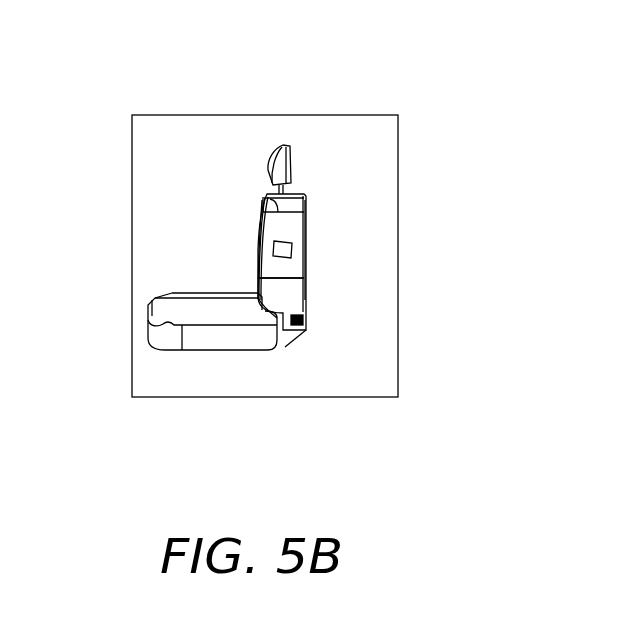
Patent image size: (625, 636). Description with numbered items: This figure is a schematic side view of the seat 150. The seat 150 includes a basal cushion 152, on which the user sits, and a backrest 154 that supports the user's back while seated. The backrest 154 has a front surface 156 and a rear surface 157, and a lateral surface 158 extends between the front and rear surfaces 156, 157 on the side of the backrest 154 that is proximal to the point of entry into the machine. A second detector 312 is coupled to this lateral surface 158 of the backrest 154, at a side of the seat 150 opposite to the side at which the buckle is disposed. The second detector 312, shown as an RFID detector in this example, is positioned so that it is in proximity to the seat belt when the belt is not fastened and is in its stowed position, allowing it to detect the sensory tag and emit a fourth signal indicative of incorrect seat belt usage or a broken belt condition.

The seat 150 is at (367, 150).
The basal cushion 152 is at (202, 371).
The backrest 154 is at (327, 238).
The front surface 156 is at (263, 225).
The rear surface 157 is at (307, 220).
The lateral surface 158 is at (285, 269).
The second detector 312 is at (295, 252).